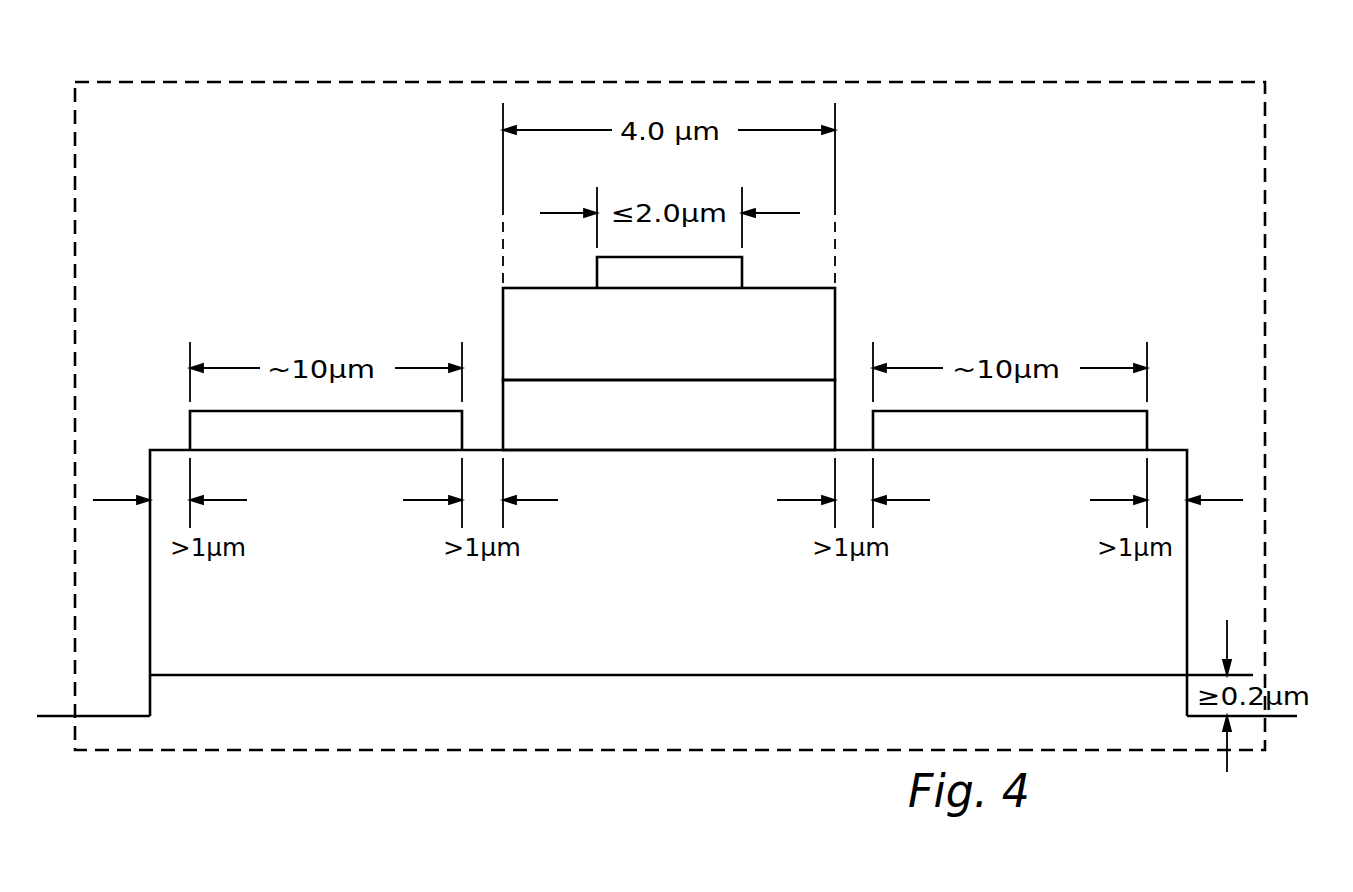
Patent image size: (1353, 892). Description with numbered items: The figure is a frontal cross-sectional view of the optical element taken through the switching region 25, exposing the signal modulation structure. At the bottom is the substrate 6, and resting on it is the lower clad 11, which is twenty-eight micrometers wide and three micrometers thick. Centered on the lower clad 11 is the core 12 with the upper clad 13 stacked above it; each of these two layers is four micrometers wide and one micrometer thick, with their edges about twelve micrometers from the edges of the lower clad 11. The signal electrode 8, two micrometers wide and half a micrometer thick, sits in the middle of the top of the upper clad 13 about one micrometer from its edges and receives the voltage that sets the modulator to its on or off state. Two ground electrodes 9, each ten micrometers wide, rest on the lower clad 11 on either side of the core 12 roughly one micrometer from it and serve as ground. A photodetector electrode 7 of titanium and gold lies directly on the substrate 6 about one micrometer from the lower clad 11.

The substrate 6 is at (817, 725).
The photodetector electrode 7 is at (1036, 672).
The signal electrode 8 is at (602, 272).
The ground electrode 9 is at (1021, 438).
The lower clad 11 is at (676, 555).
The core 12 is at (737, 428).
The upper clad 13 is at (737, 343).
The switching region 25 is at (1268, 160).